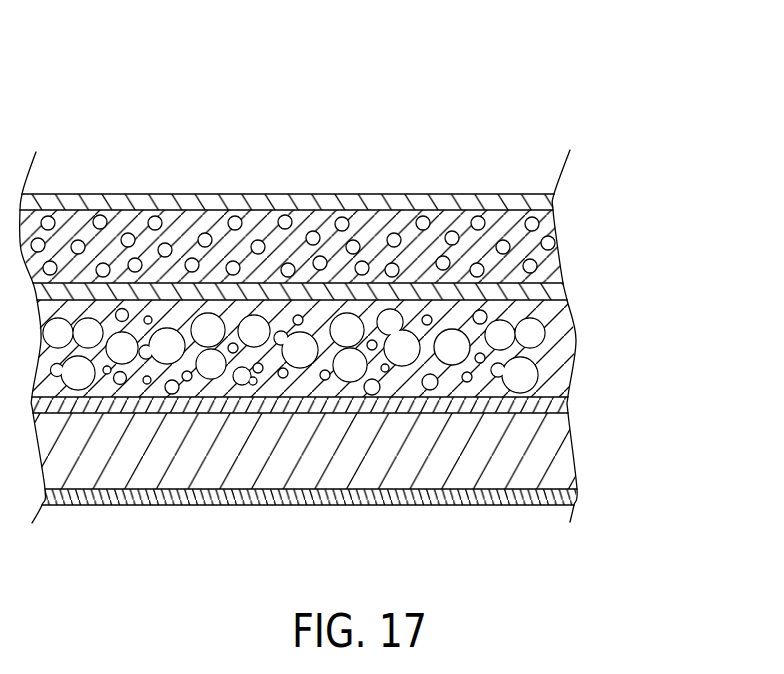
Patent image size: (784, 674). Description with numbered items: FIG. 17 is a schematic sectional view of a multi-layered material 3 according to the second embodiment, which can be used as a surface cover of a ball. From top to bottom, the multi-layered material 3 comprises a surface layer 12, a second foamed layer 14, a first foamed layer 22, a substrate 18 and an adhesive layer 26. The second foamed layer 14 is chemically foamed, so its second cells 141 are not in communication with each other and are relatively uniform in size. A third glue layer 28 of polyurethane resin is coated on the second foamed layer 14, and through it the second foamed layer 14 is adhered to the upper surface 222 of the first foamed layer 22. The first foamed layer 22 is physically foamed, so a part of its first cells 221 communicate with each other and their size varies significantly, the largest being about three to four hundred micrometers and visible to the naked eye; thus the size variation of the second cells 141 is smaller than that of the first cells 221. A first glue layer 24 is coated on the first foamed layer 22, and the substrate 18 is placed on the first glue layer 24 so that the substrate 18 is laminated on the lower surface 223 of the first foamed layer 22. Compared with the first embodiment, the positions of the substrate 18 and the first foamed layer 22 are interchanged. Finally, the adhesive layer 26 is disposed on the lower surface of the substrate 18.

The multi-layered material 3 is at (577, 118).
The surface layer 12 is at (553, 201).
The second foamed layer 14 is at (328, 249).
The second cells 141 is at (557, 257).
The upper surface of the first foamed layer 222 is at (552, 282).
The third glue layer 28 is at (558, 292).
The first foamed layer 22 is at (332, 348).
The first cells 221 is at (527, 372).
The first glue layer 24 is at (556, 408).
The lower surface of the first foamed layer 223 is at (567, 440).
The substrate 18 is at (560, 466).
The adhesive layer 26 is at (566, 500).